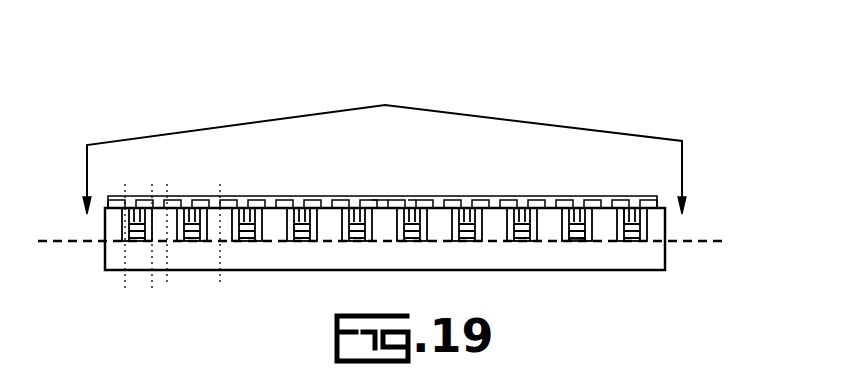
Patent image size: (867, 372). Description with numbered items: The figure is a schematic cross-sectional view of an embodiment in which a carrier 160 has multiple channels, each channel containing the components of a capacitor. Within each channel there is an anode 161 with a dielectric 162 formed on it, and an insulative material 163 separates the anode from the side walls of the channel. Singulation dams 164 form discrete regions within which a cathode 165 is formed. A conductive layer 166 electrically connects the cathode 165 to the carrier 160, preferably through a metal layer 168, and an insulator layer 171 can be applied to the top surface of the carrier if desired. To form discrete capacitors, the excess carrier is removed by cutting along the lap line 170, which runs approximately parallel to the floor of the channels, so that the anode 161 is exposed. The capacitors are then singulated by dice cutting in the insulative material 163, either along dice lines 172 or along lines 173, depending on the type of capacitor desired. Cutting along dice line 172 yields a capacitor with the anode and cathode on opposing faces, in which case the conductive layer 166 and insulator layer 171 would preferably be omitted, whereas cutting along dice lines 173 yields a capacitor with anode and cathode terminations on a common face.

The lap line 170 is at (75, 241).
The carrier 160 is at (114, 222).
The insulator layer 171 is at (268, 196).
The metal layer 168 is at (327, 207).
The conductive layer 166 is at (408, 205).
The cathode 165 is at (525, 212).
The insulative material 163 is at (612, 218).
The singulation dam 164 is at (631, 216).
The dielectric 162 is at (568, 232).
The anode 161 is at (578, 240).
The dice line 172 is at (125, 280).
The dice line 173 is at (167, 262).